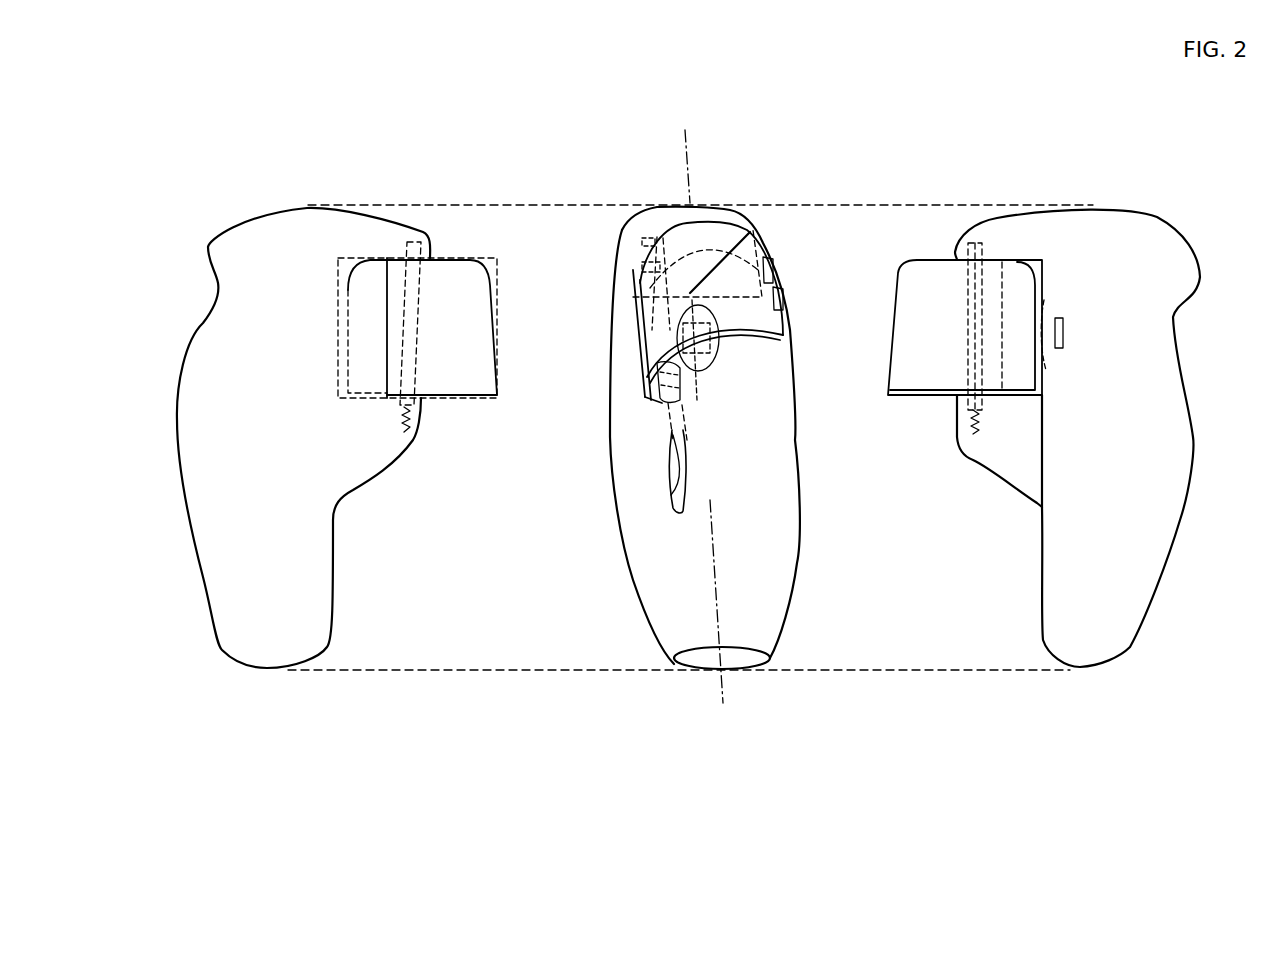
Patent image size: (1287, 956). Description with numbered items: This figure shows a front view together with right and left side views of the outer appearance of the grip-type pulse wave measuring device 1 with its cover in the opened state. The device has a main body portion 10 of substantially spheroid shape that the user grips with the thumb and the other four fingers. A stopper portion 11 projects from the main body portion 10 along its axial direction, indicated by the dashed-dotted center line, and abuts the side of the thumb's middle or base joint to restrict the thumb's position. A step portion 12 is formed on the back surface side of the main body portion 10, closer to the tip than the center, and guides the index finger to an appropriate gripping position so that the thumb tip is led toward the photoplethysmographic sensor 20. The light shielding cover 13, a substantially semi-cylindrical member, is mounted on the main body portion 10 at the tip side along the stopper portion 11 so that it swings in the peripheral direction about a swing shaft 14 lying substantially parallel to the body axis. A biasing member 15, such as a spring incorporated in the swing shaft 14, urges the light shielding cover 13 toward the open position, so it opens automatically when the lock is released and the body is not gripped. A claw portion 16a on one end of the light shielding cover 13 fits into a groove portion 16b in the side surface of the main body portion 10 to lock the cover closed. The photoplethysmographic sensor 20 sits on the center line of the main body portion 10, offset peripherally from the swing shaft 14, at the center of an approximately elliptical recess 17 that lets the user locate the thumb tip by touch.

The grip-type pulse wave measuring device 1 is at (745, 153).
The main body portion 10 is at (217, 593).
The stopper portion 11 is at (373, 463).
The step portion 12 is at (198, 272).
The light shielding cover 13 is at (467, 398).
The swing shaft 14 is at (428, 315).
The biasing member 15 is at (410, 432).
The claw portion 16a is at (777, 270).
The groove portion 16b is at (1063, 330).
The recess 17 is at (713, 360).
The photoplethysmographic sensor 20 is at (707, 345).